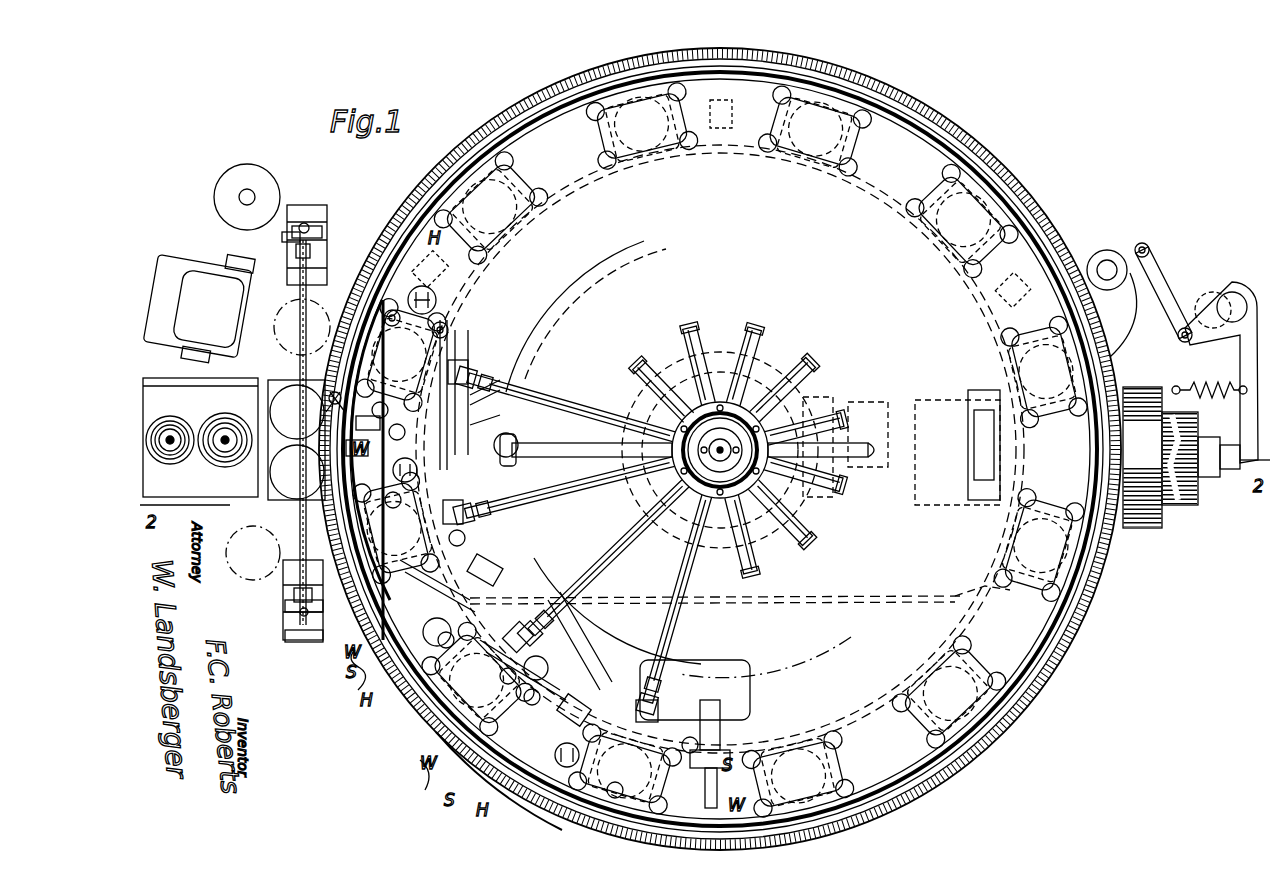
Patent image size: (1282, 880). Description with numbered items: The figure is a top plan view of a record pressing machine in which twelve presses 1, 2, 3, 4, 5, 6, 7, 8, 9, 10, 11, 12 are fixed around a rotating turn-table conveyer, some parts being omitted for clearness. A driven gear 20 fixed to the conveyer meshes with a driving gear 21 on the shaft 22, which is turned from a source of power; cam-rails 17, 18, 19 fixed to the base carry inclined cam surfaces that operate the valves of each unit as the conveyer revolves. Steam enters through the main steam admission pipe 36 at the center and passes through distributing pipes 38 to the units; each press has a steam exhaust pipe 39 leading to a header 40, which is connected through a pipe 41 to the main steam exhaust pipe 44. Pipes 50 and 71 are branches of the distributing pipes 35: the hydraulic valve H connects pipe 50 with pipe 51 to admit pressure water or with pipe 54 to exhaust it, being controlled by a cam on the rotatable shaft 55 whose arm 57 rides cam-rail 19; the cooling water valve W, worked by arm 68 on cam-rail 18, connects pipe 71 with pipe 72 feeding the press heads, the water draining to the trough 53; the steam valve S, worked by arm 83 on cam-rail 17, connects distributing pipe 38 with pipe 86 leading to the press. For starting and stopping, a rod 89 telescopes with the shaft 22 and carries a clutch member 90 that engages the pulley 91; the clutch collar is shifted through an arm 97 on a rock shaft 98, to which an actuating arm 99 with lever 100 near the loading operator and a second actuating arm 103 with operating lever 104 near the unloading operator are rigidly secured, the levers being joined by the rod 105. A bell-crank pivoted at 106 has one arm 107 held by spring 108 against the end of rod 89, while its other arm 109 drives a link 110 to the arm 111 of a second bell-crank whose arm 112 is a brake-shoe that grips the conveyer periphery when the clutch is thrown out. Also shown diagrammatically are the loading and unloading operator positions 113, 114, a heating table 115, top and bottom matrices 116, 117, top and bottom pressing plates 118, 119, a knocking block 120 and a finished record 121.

The press 1 is at (396, 527).
The press 2 is at (478, 679).
The press 3 is at (624, 769).
The press 4 is at (797, 774).
The press 5 is at (949, 692).
The press 6 is at (1039, 544).
The press 7 is at (1044, 371).
The press 8 is at (962, 221).
The press 9 is at (814, 131).
The press 10 is at (641, 126).
The press 11 is at (491, 208).
The press 12 is at (401, 354).
The cam-rail 17 is at (1020, 186).
The cam-rail 18 is at (1042, 212).
The cam-rail 19 is at (1050, 240).
The driven gear 20 is at (768, 360).
The driving gear 21 is at (825, 398).
The shaft 22 is at (950, 450).
The distributing pipes 35 is at (757, 320).
The main steam admission pipe 36 is at (718, 440).
The distributing pipes 38 is at (612, 550).
The steam exhaust pipe 39 is at (535, 505).
The header 40 is at (548, 320).
The pipe 41 is at (545, 451).
The main steam exhaust pipe 44 is at (827, 439).
The pipe 50 is at (550, 541).
The pipe 51 is at (388, 300).
The trough 53 is at (734, 156).
The pipe 54 is at (440, 377).
The rotatable shaft 55 is at (415, 288).
The arm 57 is at (385, 312).
The arm 68 is at (440, 736).
The pipe 71 is at (545, 400).
The pipe 72 is at (617, 783).
The arm 83 is at (432, 786).
The pipe 86 is at (735, 740).
The rod 89 is at (1233, 470).
The clutch member 90 is at (1182, 505).
The pulley 91 is at (1145, 528).
The arm 97 is at (322, 618).
The rock shaft 98 is at (308, 290).
The actuating arm 99 is at (285, 620).
The lever 100 is at (240, 606).
The second actuating arm 103 is at (322, 232).
The operating lever 104 is at (290, 240).
The rod 105 is at (312, 252).
The pivot 106 is at (1232, 292).
The arm 107 is at (1240, 360).
The spring 108 is at (1209, 399).
The arm 109 is at (1209, 306).
The link 110 is at (1160, 280).
The arm 111 is at (1142, 244).
The brake-shoe 112 is at (1124, 326).
The position of loading operator 113 is at (236, 566).
The position of unloading operator 114 is at (282, 316).
The heating table 115 is at (165, 378).
The top matrix 116 is at (168, 416).
The bottom matrix 117 is at (222, 413).
The top pressing plate 118 is at (290, 386).
The bottom pressing plate 119 is at (268, 497).
The knocking block 120 is at (190, 262).
The finished record 121 is at (230, 176).